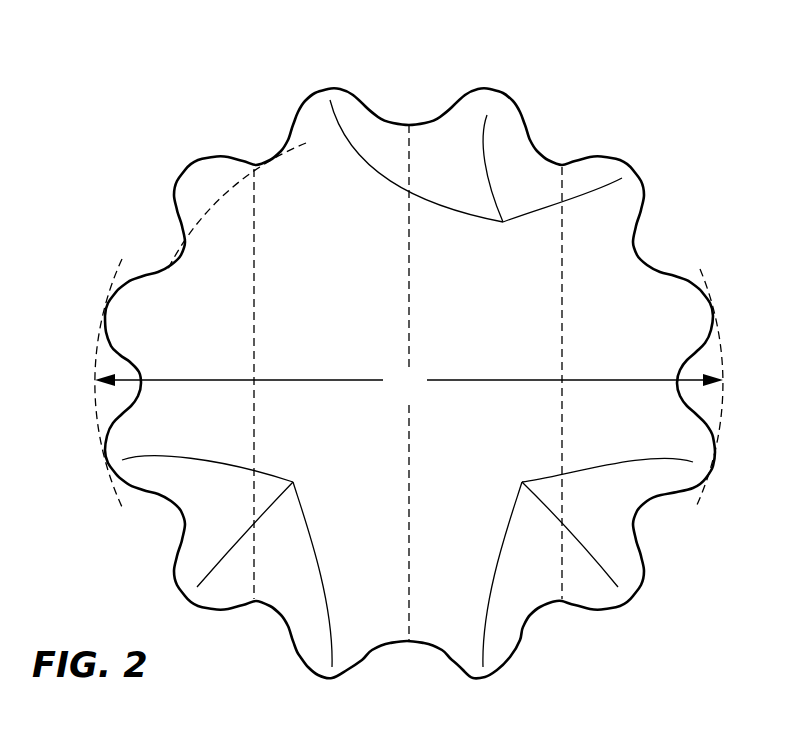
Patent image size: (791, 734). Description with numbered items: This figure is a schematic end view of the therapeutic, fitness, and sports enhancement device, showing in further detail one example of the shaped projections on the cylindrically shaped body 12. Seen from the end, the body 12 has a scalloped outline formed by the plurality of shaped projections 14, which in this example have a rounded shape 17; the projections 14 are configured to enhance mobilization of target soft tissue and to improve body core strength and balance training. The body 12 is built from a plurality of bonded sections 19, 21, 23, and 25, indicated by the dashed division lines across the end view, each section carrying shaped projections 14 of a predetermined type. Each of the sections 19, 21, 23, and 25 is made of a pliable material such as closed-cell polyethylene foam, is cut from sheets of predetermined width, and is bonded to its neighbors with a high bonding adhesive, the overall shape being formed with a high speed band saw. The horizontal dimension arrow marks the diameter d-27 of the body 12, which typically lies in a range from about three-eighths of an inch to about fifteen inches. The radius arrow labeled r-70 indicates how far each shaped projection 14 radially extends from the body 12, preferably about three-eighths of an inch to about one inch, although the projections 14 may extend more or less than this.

The cylindrically shaped body 12 is at (211, 117).
The shaped projections 14 is at (407, 383).
The rounded shape 17 is at (341, 76).
The section 19 is at (181, 322).
The section 21 is at (321, 322).
The section 23 is at (473, 322).
The section 25 is at (620, 322).
The diameter d- 27 is at (409, 385).
The radial extent r- 70 is at (220, 199).